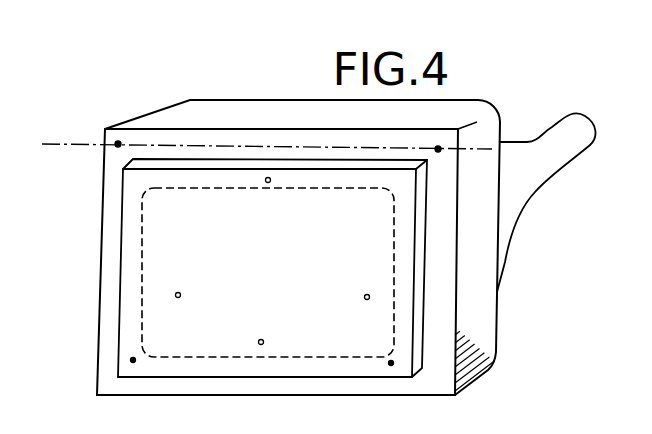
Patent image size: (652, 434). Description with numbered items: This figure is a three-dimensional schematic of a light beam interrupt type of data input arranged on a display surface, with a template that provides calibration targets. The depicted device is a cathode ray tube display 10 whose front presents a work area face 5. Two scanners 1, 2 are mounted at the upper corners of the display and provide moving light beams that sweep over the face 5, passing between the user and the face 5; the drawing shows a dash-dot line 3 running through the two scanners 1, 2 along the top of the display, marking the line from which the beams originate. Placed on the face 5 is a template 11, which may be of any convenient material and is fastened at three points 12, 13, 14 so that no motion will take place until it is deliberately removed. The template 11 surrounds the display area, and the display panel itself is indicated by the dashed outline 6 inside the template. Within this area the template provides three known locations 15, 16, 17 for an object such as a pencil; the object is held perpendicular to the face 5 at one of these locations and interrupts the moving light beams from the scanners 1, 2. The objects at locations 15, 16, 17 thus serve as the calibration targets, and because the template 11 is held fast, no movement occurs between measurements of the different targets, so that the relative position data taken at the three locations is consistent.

The scanner 1 is at (118, 144).
The scanner 2 is at (438, 149).
The pivot axis 3 is at (52, 145).
The work area face 5 is at (195, 233).
The screen frame 6 is at (140, 260).
The cathode ray tube display 10 is at (552, 162).
The template 11 is at (132, 218).
The fastening point 12 is at (133, 360).
The fastening point 13 is at (394, 362).
The fastening point 14 is at (269, 178).
The known location 15 is at (179, 293).
The known location 16 is at (262, 340).
The known location 17 is at (366, 294).